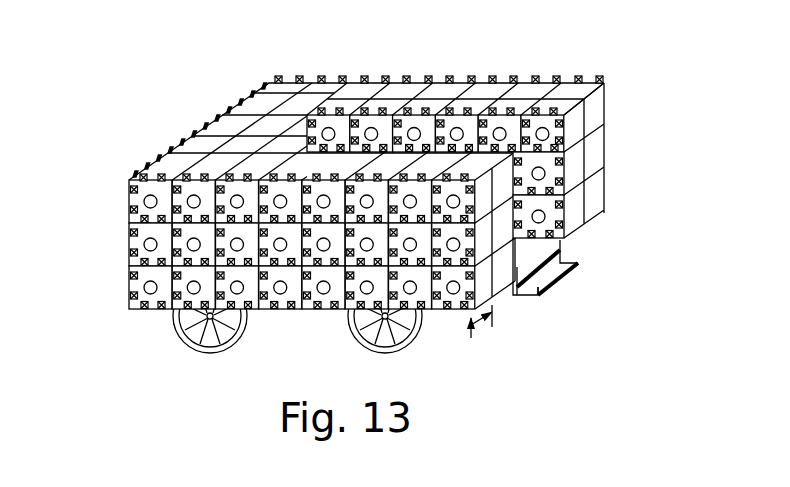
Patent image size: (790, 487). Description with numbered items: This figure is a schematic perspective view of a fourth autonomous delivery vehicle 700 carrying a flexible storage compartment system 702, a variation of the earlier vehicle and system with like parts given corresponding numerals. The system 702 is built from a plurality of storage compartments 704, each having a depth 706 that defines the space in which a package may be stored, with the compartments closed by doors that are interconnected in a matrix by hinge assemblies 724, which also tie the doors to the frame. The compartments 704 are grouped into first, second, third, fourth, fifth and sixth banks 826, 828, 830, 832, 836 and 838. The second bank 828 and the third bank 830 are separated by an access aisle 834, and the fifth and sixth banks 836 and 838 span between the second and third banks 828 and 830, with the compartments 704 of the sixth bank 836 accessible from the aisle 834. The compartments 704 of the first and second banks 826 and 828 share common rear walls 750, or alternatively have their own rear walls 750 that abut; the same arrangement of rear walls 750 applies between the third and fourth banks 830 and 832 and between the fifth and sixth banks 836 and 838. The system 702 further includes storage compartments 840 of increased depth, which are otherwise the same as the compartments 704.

The fourth autonomous delivery vehicle 700 is at (361, 196).
The flexible storage compartment system 702 is at (618, 62).
The storage compartments 704 is at (322, 126).
The depths 706 is at (480, 330).
The hinge assemblies 724 is at (176, 283).
The rear walls 750 is at (397, 168).
The first bank 826 is at (126, 294).
The second bank 828 is at (587, 290).
The third bank 830 is at (556, 178).
The fourth bank 832 is at (606, 153).
The access aisle 834 is at (548, 293).
The fifth bank 836 is at (168, 114).
The sixth bank 838 is at (273, 136).
The storage compartments with an increased depth 840 is at (200, 177).